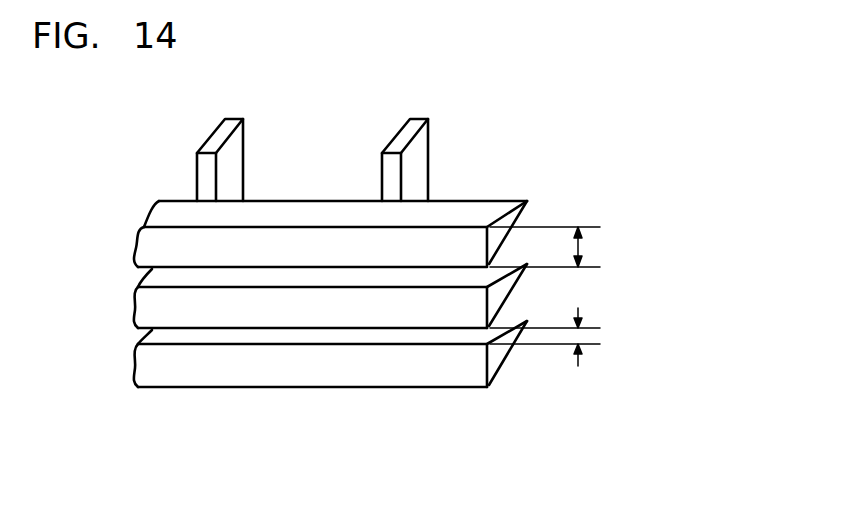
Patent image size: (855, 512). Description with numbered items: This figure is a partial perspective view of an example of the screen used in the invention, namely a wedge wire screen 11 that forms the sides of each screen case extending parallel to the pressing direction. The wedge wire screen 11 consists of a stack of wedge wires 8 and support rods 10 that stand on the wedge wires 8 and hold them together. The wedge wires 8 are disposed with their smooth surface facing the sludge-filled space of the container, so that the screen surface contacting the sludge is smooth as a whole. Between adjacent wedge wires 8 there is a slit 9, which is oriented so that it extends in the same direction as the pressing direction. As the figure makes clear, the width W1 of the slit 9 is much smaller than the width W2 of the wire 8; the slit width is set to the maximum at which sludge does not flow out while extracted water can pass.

The wedge wire 8 is at (443, 237).
The slit 9 is at (323, 338).
The support rod 10 is at (235, 173).
The wedge wire screen 11 is at (412, 275).
The width of the slit W1 is at (580, 337).
The width of the wire W2 is at (580, 252).